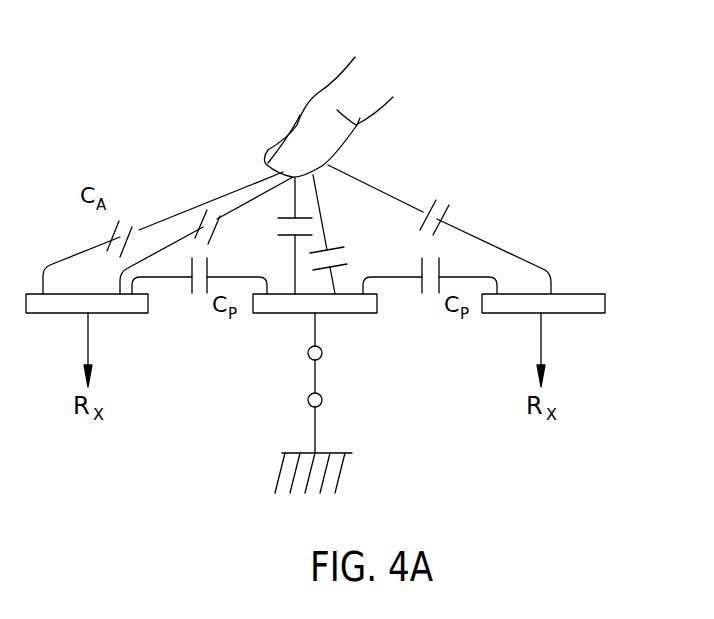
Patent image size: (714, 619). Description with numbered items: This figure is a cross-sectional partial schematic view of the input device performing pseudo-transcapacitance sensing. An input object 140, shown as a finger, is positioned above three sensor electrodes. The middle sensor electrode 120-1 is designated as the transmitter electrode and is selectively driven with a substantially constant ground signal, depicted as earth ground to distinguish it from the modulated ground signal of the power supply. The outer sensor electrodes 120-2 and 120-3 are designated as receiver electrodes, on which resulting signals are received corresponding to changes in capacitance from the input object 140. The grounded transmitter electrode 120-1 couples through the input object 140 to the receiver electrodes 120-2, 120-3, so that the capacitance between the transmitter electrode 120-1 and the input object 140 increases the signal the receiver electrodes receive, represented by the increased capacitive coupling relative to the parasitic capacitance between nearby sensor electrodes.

The input object 140 is at (343, 90).
The sensor electrode 120-1 is at (364, 313).
The sensor electrode 120-2 is at (137, 313).
The sensor electrode 120-3 is at (590, 313).